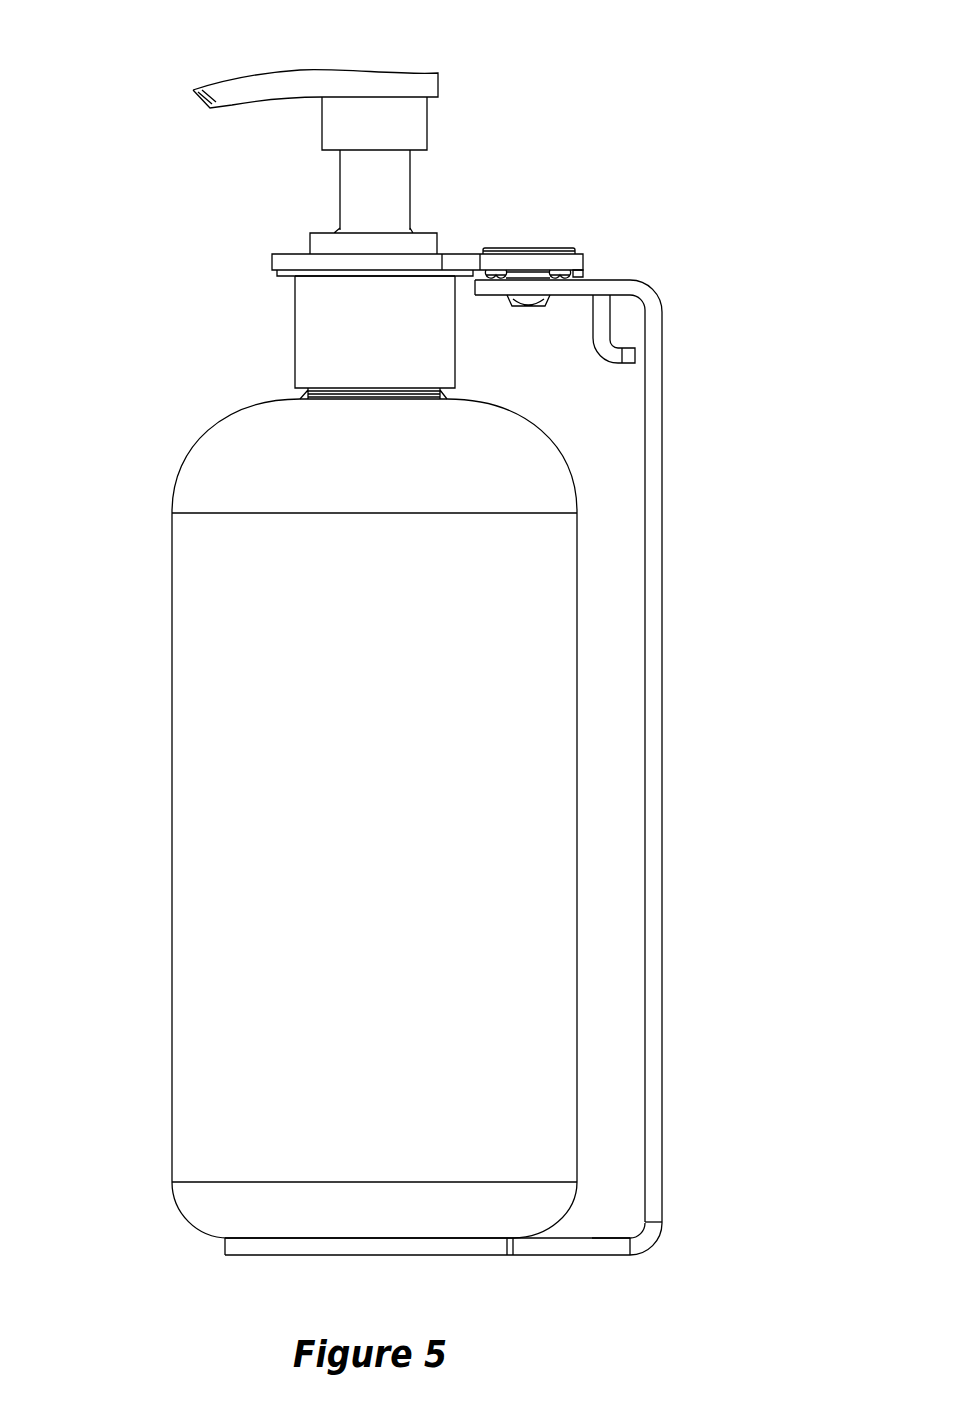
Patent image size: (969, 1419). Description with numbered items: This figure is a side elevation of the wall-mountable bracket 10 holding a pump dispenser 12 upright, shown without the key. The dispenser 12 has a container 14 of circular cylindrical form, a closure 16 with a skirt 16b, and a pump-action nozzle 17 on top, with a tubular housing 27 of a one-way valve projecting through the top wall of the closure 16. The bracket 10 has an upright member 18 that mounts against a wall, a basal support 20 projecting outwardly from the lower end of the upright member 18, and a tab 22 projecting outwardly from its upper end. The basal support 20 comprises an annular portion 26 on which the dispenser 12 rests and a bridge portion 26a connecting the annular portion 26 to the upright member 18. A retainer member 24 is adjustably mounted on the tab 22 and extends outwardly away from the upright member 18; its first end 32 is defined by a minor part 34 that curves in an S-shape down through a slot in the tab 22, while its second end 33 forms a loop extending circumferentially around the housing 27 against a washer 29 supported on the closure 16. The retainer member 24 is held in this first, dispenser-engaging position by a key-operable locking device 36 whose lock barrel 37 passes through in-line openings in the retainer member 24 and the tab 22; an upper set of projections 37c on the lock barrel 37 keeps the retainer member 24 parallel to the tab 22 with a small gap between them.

The wall-mountable bracket 10 is at (722, 148).
The pump dispenser 12 is at (122, 768).
The container 14 is at (170, 845).
The closure 16 is at (290, 326).
The skirt 16b is at (372, 302).
The pump-action nozzle 17 is at (243, 67).
The upright member 18 is at (668, 762).
The basal support 20 is at (467, 1257).
The tab 22 is at (591, 333).
The retainer member 24 is at (463, 251).
The annular portion 26 is at (232, 1246).
The bridge portion 26a is at (592, 1238).
The tubular housing 27 is at (320, 232).
The washer 29 is at (427, 272).
The first end 32 is at (625, 356).
The second end 33 is at (266, 259).
The minor part 34 is at (572, 299).
The key-operable locking device 36 is at (533, 247).
The lock barrel 37 is at (530, 308).
The upper projections 37c is at (586, 255).